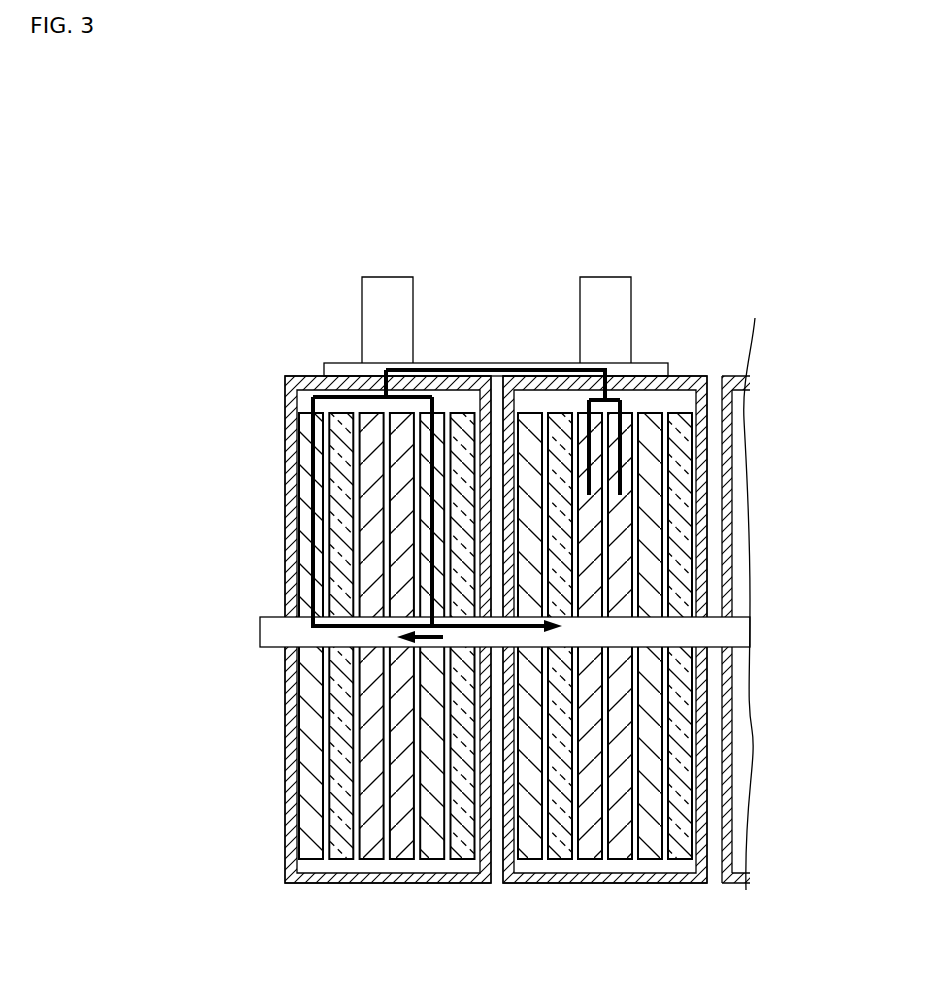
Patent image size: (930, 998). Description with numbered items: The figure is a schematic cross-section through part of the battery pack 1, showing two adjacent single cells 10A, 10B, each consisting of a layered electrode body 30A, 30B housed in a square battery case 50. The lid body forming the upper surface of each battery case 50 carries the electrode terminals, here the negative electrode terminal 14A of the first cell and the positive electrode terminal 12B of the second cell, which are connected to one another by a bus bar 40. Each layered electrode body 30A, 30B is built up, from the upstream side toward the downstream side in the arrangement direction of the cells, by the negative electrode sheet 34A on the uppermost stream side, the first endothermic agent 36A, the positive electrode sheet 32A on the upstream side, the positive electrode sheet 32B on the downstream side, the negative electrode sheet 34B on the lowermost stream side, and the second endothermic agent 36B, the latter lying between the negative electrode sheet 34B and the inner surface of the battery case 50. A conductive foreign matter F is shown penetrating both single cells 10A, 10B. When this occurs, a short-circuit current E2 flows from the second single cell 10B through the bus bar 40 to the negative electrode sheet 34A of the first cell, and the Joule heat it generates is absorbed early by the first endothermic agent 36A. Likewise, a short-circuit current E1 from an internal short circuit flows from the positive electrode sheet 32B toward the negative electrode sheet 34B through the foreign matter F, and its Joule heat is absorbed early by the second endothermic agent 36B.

The battery pack 1 is at (260, 208).
The negative electrode terminal 14A is at (388, 277).
The positive electrode terminal 12B is at (605, 277).
The short-circuit current E2 is at (494, 363).
The bus bar 40 is at (655, 363).
The conductive foreign matter F is at (275, 617).
The short-circuit current E1 is at (425, 640).
The layered electrode body 30A is at (299, 746).
The layered electrode body 30B is at (693, 755).
The battery case 50 is at (285, 825).
The single cell 10A is at (330, 634).
The single cell 10B is at (660, 659).
The negative electrode sheet 34A is at (311, 861).
The first endothermic agent 36A is at (340, 861).
The positive electrode sheet 32A is at (370, 861).
The positive electrode sheet 32B is at (400, 861).
The negative electrode sheet 34B is at (430, 861).
The second endothermic agent 36B is at (462, 861).